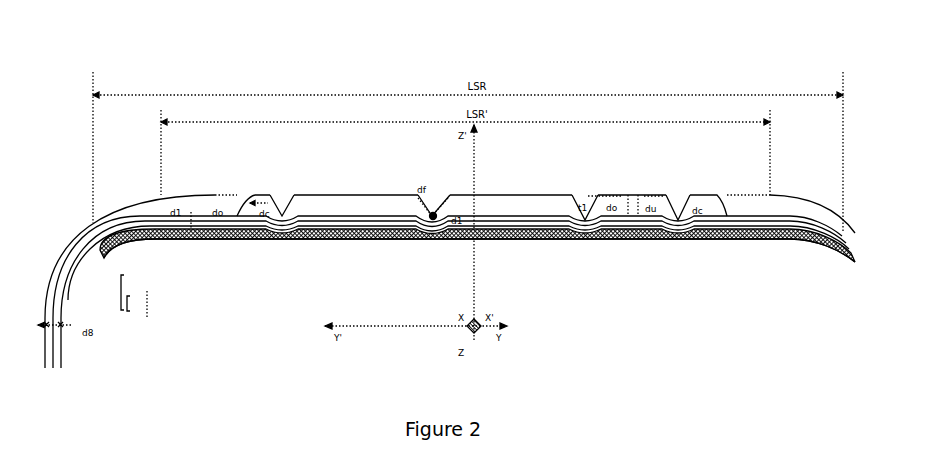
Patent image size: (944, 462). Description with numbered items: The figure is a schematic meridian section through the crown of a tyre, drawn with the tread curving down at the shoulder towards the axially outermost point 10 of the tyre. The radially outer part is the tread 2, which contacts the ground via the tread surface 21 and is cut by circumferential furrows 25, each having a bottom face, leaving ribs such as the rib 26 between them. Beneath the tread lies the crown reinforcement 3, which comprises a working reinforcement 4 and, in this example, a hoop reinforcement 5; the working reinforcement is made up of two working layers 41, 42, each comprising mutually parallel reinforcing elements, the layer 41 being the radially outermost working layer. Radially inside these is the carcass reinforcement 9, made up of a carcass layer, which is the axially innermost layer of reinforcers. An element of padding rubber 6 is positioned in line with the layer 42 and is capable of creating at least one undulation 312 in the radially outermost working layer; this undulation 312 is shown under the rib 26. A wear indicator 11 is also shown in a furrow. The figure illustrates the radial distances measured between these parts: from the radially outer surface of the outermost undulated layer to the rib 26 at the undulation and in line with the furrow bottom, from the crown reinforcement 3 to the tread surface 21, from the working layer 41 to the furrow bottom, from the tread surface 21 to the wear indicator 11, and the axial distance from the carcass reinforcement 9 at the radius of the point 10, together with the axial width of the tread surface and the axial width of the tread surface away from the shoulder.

The tread 2 is at (507, 199).
The crown reinforcement 3 is at (117, 292).
The working reinforcement 4 is at (133, 304).
The hoop reinforcement 5 is at (167, 235).
The element of padding rubber 6 is at (357, 236).
The carcass reinforcement 9 is at (74, 267).
The axially outermost point 10 is at (60, 326).
The wear indicator 11 is at (436, 210).
The tread surface 21 is at (244, 194).
The circumferential furrow 25 is at (282, 216).
The rib 26 is at (472, 192).
The working layer 41 is at (205, 240).
The working layer 42 is at (210, 250).
The undulation 312 is at (522, 216).